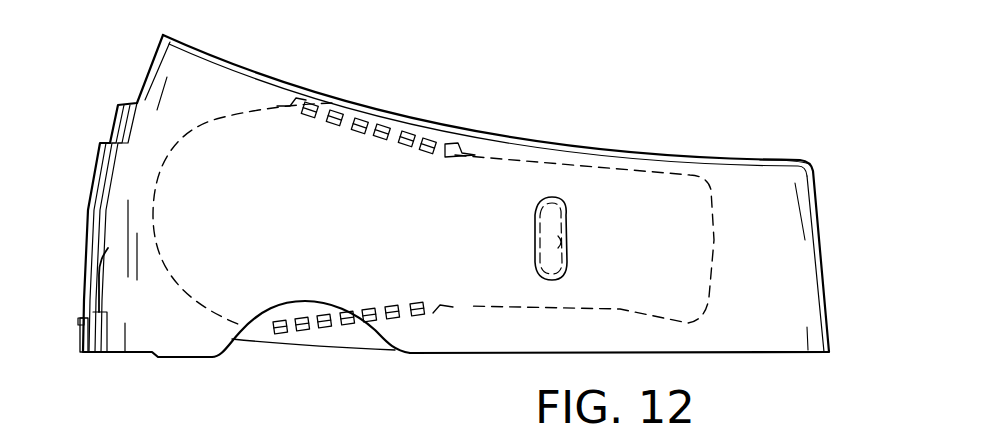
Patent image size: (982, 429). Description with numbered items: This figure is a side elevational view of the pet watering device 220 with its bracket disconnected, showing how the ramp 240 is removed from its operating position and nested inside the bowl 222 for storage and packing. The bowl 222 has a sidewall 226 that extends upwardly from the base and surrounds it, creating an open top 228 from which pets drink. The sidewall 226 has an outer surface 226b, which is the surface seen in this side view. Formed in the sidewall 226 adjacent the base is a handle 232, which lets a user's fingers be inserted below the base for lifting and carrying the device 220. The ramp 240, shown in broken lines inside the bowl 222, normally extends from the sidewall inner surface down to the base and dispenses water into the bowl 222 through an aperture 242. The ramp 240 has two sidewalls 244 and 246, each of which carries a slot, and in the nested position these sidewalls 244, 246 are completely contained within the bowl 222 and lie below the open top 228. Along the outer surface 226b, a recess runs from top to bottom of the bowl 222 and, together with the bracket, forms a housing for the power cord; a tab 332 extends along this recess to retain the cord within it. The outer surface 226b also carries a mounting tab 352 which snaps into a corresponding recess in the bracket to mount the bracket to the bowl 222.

The pet watering device 220 is at (718, 115).
The bowl 222 is at (246, 70).
The sidewall 226 is at (824, 233).
The outer surface 226b is at (805, 286).
The open top 228 is at (748, 158).
The handle 232 is at (218, 350).
The ramp 240 is at (253, 175).
The aperture 242 is at (566, 247).
The ramp sidewall 244 is at (482, 157).
The ramp sidewall 246 is at (477, 306).
The tab 332 is at (98, 170).
The mounting tab 352 is at (85, 342).